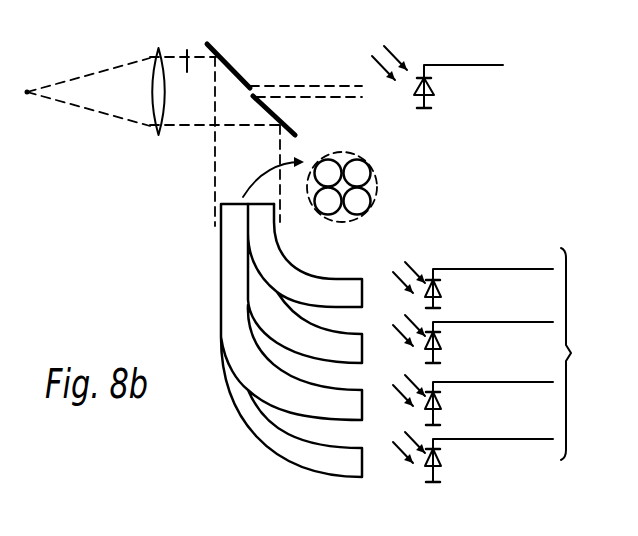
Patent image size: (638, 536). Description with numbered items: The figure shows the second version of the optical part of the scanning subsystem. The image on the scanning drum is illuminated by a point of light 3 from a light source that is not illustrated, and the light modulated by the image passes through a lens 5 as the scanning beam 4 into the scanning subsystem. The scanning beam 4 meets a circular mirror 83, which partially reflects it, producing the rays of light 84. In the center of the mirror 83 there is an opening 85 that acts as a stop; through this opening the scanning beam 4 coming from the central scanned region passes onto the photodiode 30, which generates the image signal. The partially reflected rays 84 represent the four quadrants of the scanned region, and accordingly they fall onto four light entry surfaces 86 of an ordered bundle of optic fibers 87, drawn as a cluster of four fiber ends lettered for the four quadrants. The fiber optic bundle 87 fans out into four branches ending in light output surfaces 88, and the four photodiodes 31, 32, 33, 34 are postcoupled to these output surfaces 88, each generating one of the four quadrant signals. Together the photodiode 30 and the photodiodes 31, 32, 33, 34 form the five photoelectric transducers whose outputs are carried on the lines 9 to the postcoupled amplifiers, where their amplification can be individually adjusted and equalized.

The point of light 3 is at (27, 88).
The scanning beam 4 is at (187, 48).
The lens 5 is at (152, 82).
The circular mirror 83 is at (218, 48).
The rays of light 84 is at (237, 144).
The opening 85 is at (253, 90).
The light entry surfaces 86 is at (230, 198).
The ordered bundle of optic fibers 87 is at (237, 263).
The light output surfaces 88 is at (463, 378).
The photodiode 30 is at (428, 82).
The photodiode 31 is at (442, 288).
The photodiode 32 is at (442, 341).
The photodiode 33 is at (442, 401).
The photodiode 34 is at (442, 458).
The line (Ltg.) 9 is at (594, 354).